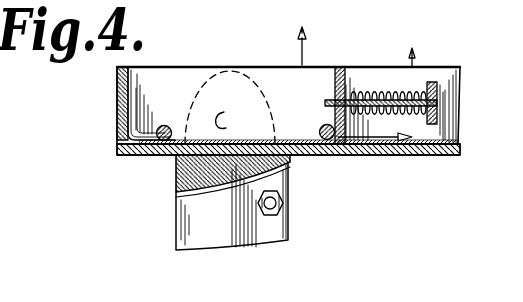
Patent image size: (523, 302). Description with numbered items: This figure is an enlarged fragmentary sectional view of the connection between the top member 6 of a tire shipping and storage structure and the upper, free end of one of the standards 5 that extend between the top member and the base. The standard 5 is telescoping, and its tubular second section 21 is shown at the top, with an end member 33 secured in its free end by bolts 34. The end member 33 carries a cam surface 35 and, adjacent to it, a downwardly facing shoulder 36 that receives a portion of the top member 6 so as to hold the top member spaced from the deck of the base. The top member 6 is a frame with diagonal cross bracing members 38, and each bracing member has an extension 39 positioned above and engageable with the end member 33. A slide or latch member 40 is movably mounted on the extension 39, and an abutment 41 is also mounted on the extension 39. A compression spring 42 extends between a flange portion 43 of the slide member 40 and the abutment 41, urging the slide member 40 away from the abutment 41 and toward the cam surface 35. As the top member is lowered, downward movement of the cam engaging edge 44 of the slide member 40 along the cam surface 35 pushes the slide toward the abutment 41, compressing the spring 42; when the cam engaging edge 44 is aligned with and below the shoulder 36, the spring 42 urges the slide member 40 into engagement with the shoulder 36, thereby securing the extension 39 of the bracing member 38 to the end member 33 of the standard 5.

The standards 5 is at (175, 210).
The top member 6 is at (406, 92).
The second section 21 is at (207, 230).
The end member 33 is at (235, 87).
The bolts 34 is at (281, 208).
The cam surface 35 is at (204, 82).
The downwardly facing shoulder 36 is at (276, 138).
The diagonal cross bracing members 38 is at (355, 36).
The extensions 39 is at (117, 124).
The slide or latch member 40 is at (125, 78).
The abutment 41 is at (440, 92).
The compression spring 42 is at (430, 92).
The flange portion 43 is at (328, 82).
The cam engaging edge 44 is at (236, 119).